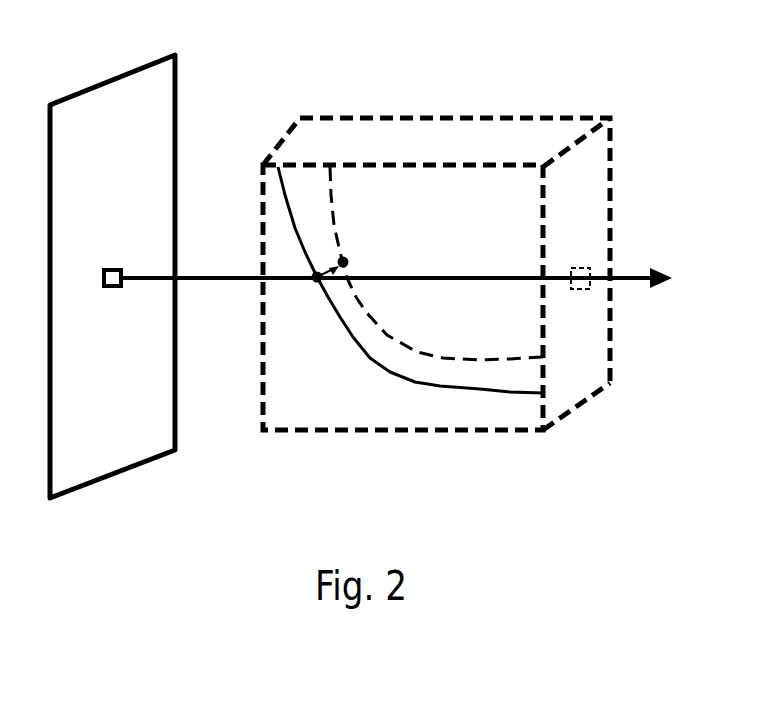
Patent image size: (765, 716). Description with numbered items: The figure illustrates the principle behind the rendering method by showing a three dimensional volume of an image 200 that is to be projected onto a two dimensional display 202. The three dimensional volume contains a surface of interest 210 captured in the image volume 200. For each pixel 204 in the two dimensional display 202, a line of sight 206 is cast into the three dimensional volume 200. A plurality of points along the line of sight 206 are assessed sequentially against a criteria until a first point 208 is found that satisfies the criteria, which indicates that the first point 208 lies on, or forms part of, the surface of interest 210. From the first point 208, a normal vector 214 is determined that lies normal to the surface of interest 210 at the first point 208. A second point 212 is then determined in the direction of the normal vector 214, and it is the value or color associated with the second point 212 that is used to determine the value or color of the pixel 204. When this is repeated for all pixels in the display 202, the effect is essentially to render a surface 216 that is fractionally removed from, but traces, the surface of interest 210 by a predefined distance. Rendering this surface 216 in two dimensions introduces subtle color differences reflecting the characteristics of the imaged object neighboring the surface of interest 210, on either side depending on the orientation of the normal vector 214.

The three dimensional volume of an image 200 is at (555, 113).
The two dimensional display 202 is at (127, 72).
The pixel 204 is at (108, 288).
The line of sight 206 is at (223, 280).
The first point 208 is at (311, 286).
The surface of interest 210 is at (370, 358).
The second point 212 is at (349, 259).
The normal vector 214 is at (329, 263).
The surface 216 is at (445, 358).